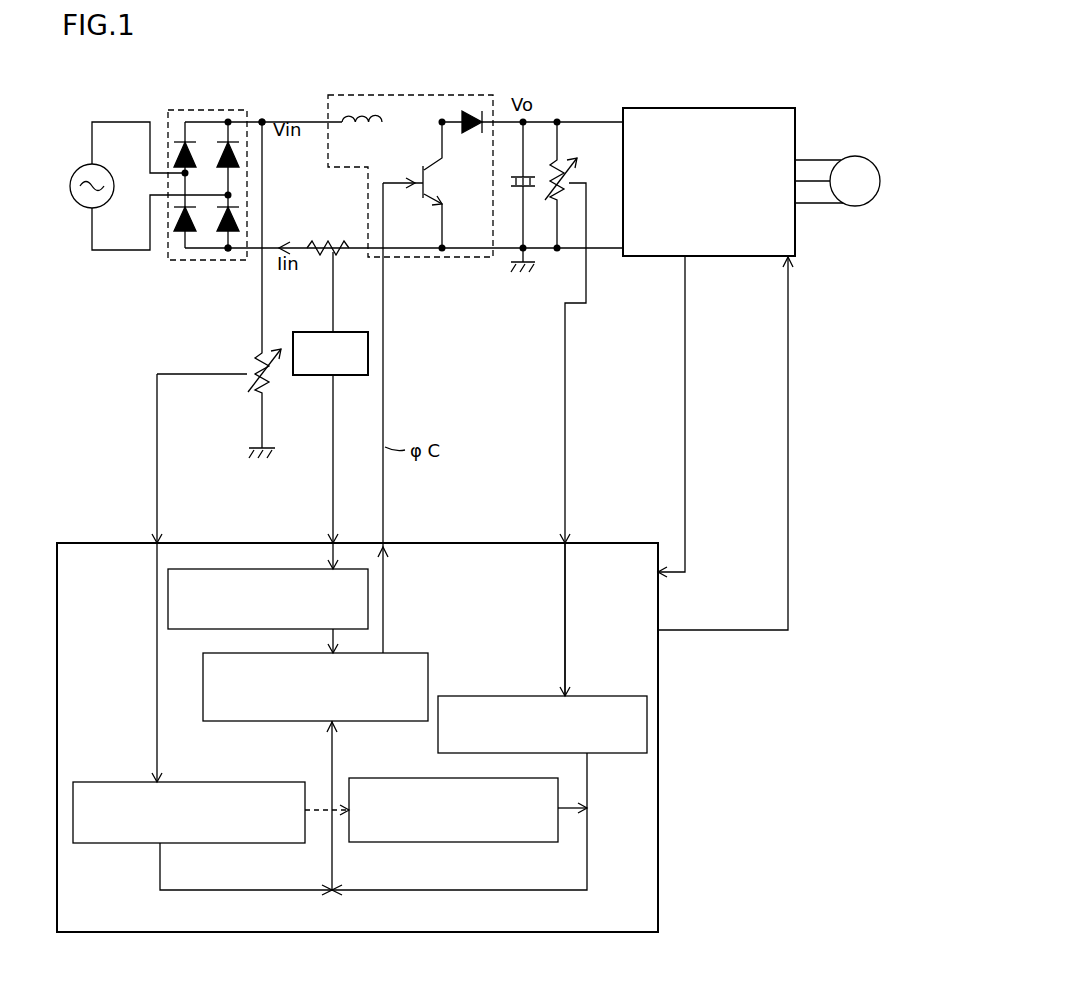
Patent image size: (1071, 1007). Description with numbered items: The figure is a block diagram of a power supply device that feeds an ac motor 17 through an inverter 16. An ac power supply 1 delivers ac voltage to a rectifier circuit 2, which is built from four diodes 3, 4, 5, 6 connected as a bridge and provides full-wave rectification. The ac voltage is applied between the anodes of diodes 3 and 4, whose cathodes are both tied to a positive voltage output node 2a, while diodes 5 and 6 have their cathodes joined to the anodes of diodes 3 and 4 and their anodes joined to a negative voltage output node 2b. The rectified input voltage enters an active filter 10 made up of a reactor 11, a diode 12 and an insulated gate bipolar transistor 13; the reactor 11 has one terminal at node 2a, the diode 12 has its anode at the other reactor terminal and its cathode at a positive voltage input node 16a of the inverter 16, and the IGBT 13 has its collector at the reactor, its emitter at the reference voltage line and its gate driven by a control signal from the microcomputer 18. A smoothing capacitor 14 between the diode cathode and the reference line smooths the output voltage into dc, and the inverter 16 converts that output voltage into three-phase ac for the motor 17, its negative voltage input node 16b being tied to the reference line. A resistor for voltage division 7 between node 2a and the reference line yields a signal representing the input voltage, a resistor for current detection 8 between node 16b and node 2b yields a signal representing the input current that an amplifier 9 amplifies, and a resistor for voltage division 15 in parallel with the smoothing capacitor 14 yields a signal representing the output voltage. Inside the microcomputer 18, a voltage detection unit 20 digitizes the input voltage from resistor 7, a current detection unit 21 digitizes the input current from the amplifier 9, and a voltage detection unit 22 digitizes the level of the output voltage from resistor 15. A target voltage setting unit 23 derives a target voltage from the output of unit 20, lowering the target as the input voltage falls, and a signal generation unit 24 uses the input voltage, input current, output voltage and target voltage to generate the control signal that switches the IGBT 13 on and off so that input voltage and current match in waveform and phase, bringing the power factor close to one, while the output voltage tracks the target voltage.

The ac power supply 1 is at (80, 171).
The rectifier circuit 2 is at (206, 185).
The positive voltage output node 2a is at (248, 121).
The negative voltage output node 2b is at (247, 259).
The diode 3 is at (183, 140).
The diode 4 is at (226, 140).
The diode 5 is at (183, 233).
The diode 6 is at (226, 233).
The resistor for voltage division 7 is at (258, 361).
The resistor for current detection 8 is at (336, 257).
The amplifier 9 is at (306, 332).
The active filter 10 is at (329, 94).
The reactor 11 is at (365, 112).
The diode 12 is at (472, 111).
The insulated gate bipolar transistor (IGBT) 13 is at (422, 178).
The smoothing capacitor 14 is at (528, 176).
The resistor for voltage division 15 is at (562, 166).
The inverter 16 is at (720, 108).
The positive voltage input node 16a is at (623, 116).
The negative voltage input node 16b is at (623, 250).
The ac motor 17 is at (855, 156).
The microcomputer 18 is at (88, 543).
The voltage detection unit 20 is at (138, 845).
The current detection unit 21 is at (195, 632).
The voltage detection unit 22 is at (508, 696).
The target voltage setting unit 23 is at (440, 843).
The signal generation unit 24 is at (397, 722).